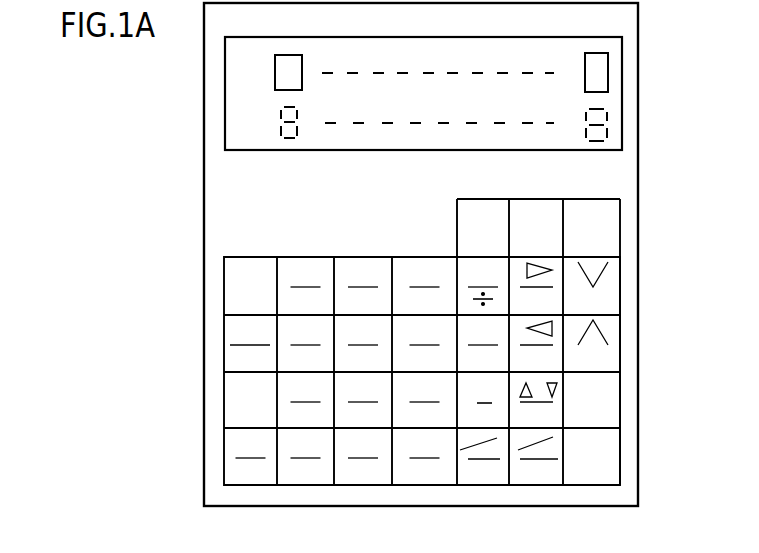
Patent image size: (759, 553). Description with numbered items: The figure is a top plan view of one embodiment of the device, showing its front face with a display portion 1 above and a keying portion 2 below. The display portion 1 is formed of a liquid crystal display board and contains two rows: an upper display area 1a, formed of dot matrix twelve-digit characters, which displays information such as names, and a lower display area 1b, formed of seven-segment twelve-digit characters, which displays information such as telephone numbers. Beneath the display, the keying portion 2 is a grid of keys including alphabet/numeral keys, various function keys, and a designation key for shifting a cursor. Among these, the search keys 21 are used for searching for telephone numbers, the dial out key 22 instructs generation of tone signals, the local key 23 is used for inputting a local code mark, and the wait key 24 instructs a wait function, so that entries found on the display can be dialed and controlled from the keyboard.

The display portion 1 is at (467, 94).
The upper display area 1a is at (548, 63).
The lower display area 1b is at (560, 142).
The keying portion 2 is at (464, 356).
The search keys 21 is at (617, 283).
The dial out key 22 is at (490, 200).
The local key 23 is at (540, 485).
The wait key 24 is at (470, 485).